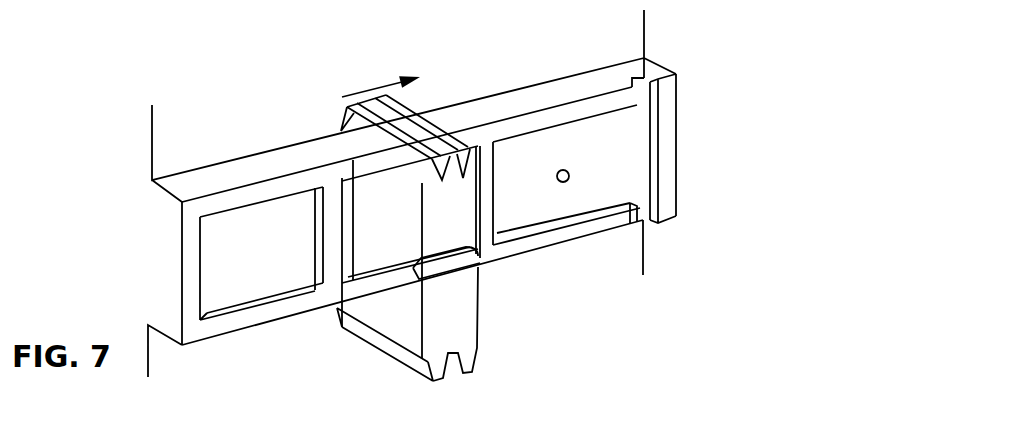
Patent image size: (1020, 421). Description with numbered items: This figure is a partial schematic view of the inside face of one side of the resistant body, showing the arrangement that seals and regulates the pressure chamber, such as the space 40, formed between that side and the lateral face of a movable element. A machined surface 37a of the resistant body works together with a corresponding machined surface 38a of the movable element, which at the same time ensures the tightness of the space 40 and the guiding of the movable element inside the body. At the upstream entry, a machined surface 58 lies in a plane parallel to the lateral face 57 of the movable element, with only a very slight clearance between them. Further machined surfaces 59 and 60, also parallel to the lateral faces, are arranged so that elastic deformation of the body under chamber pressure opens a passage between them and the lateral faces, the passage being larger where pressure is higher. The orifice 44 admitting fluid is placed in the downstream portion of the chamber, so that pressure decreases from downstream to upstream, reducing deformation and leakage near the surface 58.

The machined surface of the resistant body 37a is at (525, 98).
The machined surface of the movable element 38a is at (335, 157).
The space forming pressure chamber 40 is at (228, 238).
The orifice 44 is at (568, 181).
The lateral face of the movable element 57 is at (348, 183).
The machined surface 58 is at (190, 233).
The machined surface 59 is at (330, 233).
The machined surface 60 is at (487, 217).